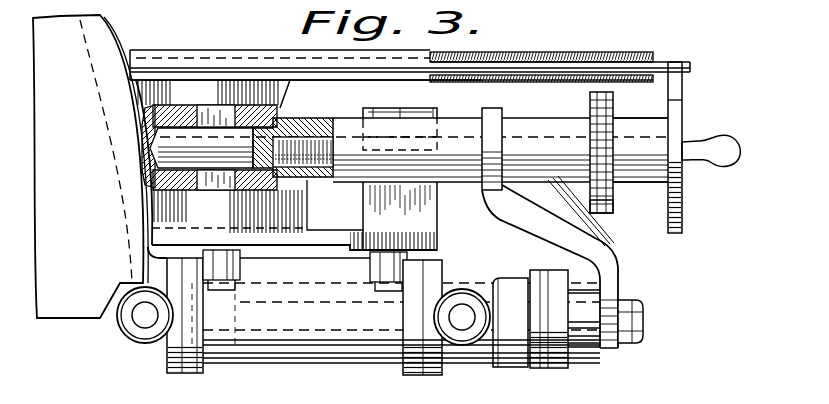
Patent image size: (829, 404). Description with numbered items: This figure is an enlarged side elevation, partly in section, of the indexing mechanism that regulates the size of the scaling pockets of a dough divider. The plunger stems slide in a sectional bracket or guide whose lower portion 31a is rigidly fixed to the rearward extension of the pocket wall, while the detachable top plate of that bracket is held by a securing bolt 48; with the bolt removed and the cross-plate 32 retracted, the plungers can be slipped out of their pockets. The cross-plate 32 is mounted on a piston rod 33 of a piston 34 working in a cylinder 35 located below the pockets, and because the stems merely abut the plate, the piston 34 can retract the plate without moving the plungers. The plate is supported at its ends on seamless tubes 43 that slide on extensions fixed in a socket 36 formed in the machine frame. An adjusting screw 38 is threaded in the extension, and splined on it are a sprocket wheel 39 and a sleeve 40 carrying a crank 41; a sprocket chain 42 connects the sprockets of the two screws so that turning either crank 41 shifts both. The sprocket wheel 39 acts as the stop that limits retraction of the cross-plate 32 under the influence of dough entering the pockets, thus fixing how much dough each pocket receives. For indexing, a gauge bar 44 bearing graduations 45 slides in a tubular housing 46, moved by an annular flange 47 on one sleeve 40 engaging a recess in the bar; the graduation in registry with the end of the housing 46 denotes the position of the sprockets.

The lower portion of the bracket or guide 31a is at (432, 220).
The cross-plate 32 is at (492, 108).
The piston rod 33 is at (577, 343).
The piston 34 is at (241, 331).
The cylinder 35 is at (358, 360).
The socket 36 is at (130, 164).
The adjusting screw 38 is at (304, 136).
The sprocket wheel 39 is at (600, 120).
The sleeve 40 is at (634, 118).
The crank 41 is at (712, 157).
The sprocket chain 42 is at (615, 206).
The seamless tube 43 is at (542, 127).
The gauge bar 44 is at (681, 137).
The graduations 45 is at (604, 57).
The tubular housing 46 is at (540, 50).
The annular flange 47 is at (682, 100).
The securing bolt 48 is at (393, 112).